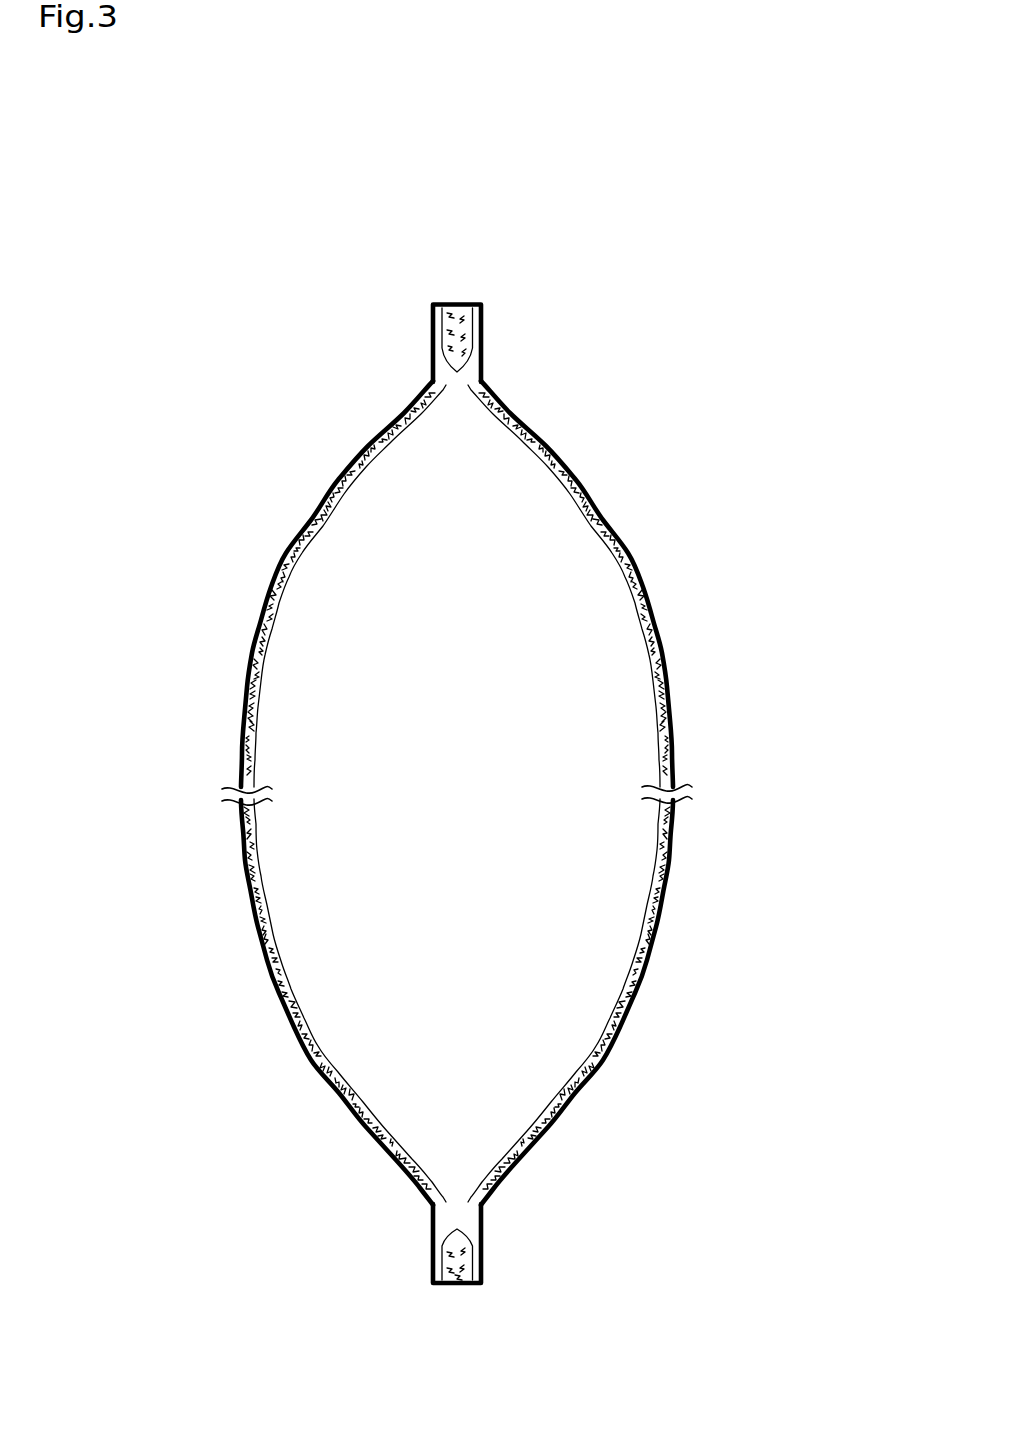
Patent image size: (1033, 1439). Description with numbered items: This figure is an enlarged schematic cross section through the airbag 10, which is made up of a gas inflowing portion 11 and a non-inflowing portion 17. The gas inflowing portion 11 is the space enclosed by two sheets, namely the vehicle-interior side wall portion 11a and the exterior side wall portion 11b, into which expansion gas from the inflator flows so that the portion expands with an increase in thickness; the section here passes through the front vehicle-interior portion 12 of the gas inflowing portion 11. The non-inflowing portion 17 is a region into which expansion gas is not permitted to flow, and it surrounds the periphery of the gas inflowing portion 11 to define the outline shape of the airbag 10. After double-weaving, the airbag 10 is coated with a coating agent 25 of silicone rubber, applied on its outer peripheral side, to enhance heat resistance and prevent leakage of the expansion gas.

The airbag 10 is at (468, 700).
The gas inflowing portion 11 is at (468, 793).
The front vehicle-interior portion 12 is at (658, 507).
The vehicle-interior side wall portion 11a is at (272, 605).
The exterior side wall portion 11b is at (660, 652).
The non-inflowing portion 17 is at (481, 334).
The coating agent 25 is at (358, 448).